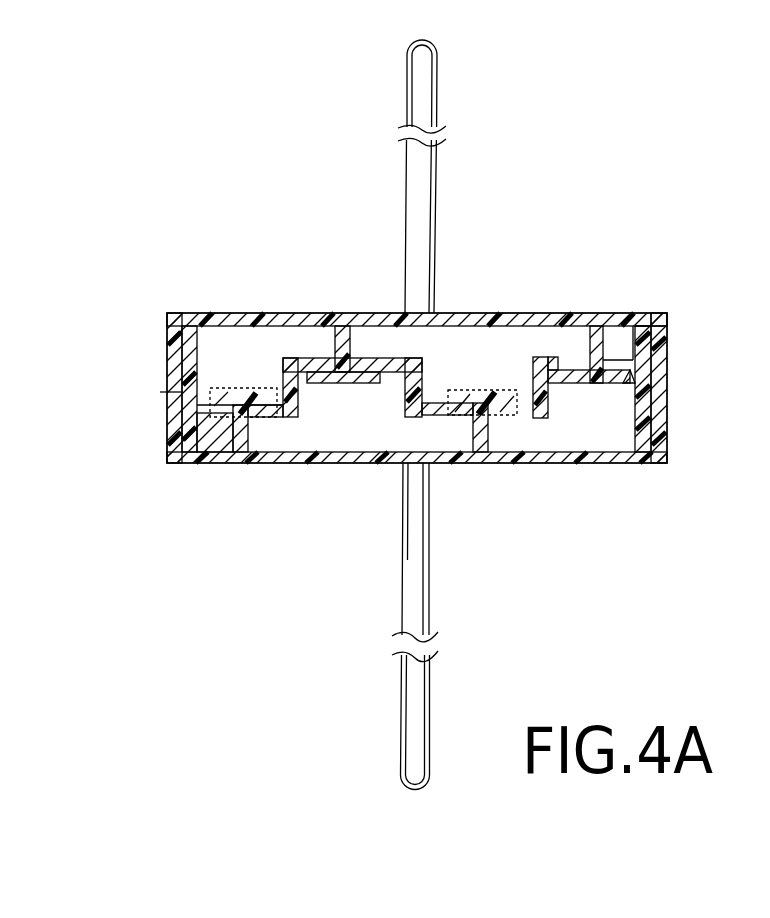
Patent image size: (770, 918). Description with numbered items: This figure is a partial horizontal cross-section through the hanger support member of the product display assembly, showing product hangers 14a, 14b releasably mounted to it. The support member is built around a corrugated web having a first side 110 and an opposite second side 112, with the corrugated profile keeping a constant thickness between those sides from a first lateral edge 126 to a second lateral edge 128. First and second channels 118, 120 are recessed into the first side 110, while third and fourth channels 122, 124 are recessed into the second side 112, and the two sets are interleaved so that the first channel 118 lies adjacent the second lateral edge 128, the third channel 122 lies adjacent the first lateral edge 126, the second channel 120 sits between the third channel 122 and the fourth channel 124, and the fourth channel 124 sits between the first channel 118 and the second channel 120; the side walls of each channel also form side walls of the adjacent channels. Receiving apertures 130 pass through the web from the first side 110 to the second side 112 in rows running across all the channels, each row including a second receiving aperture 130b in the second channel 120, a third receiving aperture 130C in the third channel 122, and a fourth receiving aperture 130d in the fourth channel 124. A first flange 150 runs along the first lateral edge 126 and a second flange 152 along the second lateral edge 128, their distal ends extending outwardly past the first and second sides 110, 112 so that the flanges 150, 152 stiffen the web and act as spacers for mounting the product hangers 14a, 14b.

The product hanger 14a is at (442, 160).
The product hanger 14b is at (399, 602).
The first side 110 is at (285, 417).
The second side 112 is at (297, 355).
The first channel 118 is at (590, 405).
The second channel 120 is at (333, 395).
The third channel 122 is at (232, 375).
The fourth channel 124 is at (468, 372).
The first lateral edge 126 is at (203, 410).
The second lateral edge 128 is at (632, 365).
The receiving aperture 130 is at (612, 367).
The second receiving aperture 130b is at (370, 355).
The third receiving aperture 130C is at (223, 414).
The fourth receiving aperture 130d is at (503, 412).
The first flange 150 is at (180, 443).
The second flange 152 is at (655, 323).